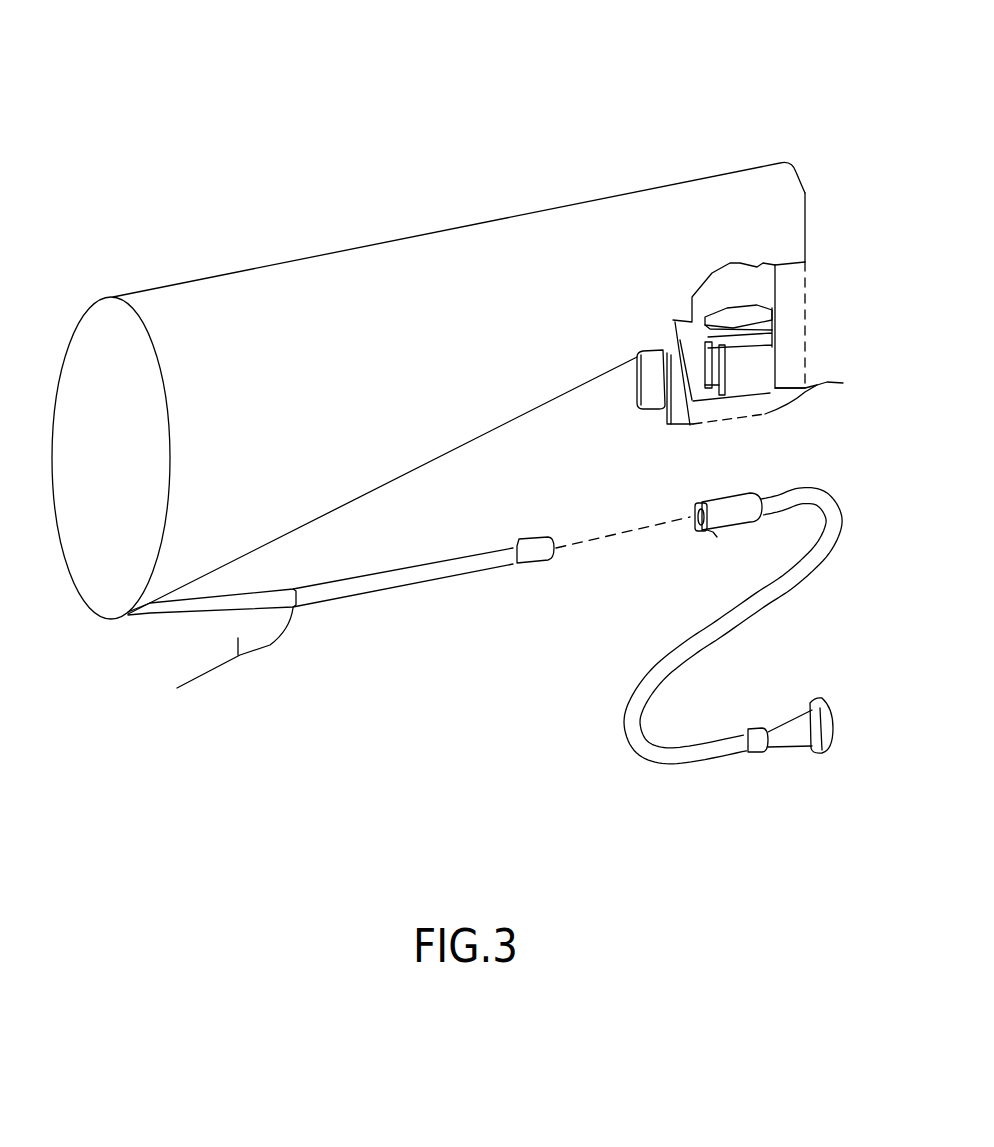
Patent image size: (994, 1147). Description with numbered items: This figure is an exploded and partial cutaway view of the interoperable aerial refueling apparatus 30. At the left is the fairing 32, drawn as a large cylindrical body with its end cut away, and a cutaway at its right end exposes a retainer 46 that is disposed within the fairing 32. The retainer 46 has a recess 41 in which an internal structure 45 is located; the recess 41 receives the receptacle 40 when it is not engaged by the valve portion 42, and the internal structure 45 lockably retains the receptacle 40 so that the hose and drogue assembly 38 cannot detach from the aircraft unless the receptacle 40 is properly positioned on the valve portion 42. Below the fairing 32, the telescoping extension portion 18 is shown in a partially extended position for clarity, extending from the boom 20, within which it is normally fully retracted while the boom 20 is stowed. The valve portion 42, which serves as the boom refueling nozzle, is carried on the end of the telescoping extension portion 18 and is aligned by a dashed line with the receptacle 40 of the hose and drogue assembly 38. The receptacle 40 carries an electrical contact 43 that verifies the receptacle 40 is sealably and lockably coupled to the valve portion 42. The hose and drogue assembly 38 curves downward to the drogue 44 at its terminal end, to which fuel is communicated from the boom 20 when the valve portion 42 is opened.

The interoperable aerial refueling apparatus 30 is at (649, 95).
The fairing 32 is at (300, 278).
The recess 41 is at (675, 322).
The retainer 46 is at (826, 386).
The internal structure 45 is at (720, 356).
The telescoping extension portion 18 is at (407, 578).
The valve portion 42 is at (537, 540).
The electrical contact 43 is at (688, 513).
The receptacle 40 is at (716, 537).
The hose and drogue assembly 38 is at (800, 623).
The drogue 44 is at (793, 745).
The boom 20 is at (240, 657).